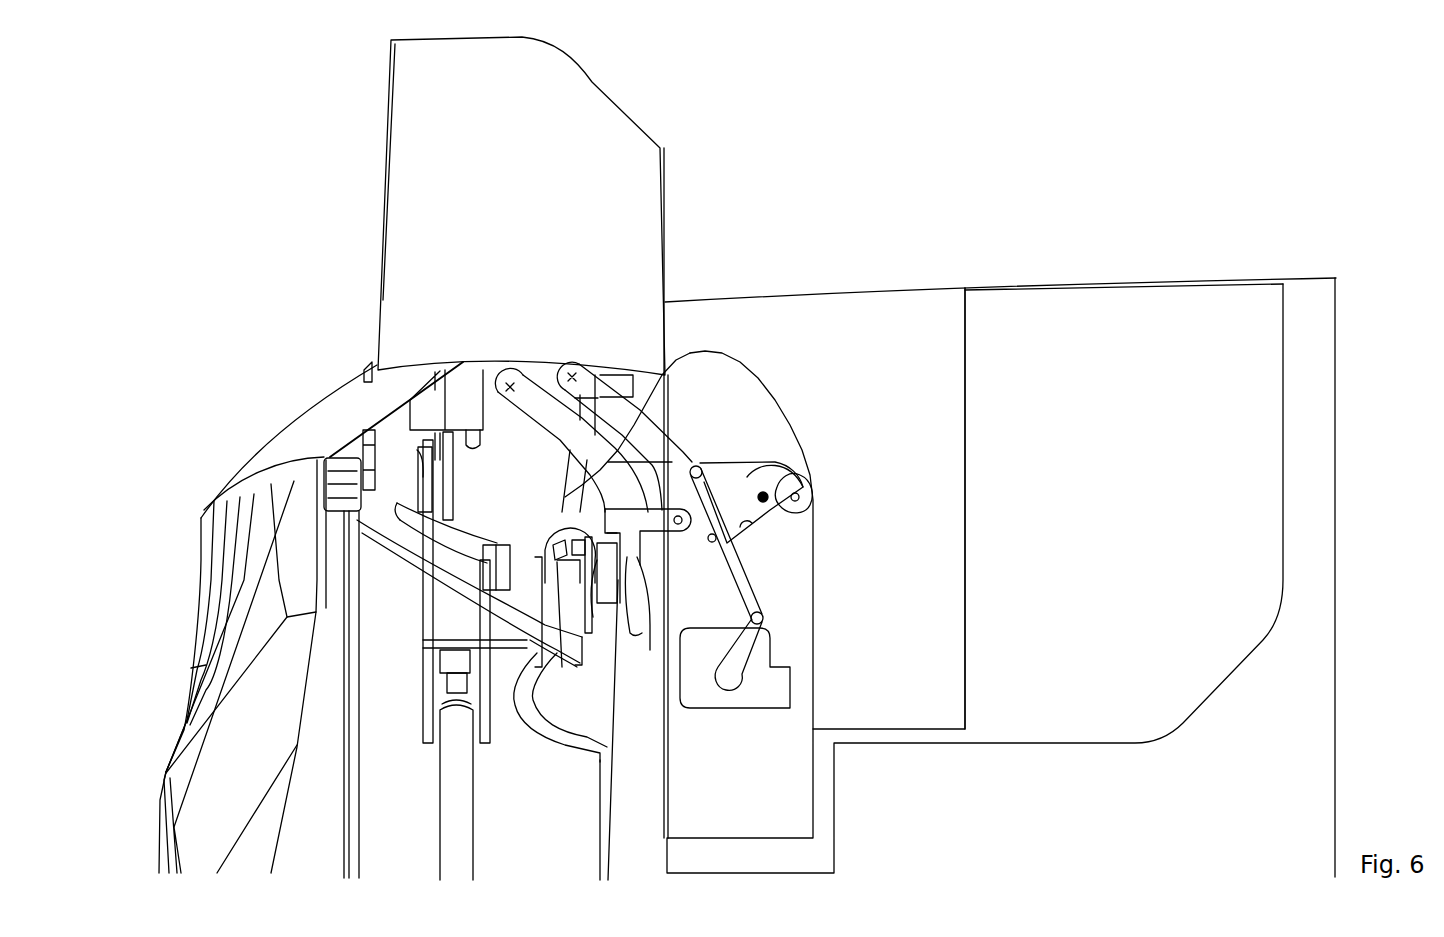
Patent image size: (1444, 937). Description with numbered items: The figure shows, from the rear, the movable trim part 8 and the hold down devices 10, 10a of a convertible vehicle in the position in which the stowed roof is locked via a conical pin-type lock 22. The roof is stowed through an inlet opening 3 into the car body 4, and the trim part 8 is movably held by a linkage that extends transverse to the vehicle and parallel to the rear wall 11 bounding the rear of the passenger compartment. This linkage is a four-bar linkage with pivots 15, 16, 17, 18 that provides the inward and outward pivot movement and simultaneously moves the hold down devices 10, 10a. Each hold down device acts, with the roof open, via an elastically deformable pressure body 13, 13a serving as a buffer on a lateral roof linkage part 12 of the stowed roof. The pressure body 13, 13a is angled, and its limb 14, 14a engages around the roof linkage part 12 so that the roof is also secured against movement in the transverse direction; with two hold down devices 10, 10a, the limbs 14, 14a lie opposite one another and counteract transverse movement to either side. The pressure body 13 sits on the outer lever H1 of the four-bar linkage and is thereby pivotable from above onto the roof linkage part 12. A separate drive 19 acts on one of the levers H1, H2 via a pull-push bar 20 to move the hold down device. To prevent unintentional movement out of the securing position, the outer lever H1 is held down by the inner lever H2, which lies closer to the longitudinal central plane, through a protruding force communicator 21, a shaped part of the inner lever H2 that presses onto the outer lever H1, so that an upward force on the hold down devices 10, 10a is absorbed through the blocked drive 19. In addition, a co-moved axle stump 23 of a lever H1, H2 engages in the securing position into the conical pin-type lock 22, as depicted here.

The trim part 8 is at (519, 181).
The inlet opening 3 is at (900, 330).
The rear wall 11 is at (1046, 369).
The car body 4 is at (373, 801).
The hold down device 10a is at (453, 397).
The four-bar linkage pivot 18 is at (508, 386).
The four-bar linkage pivot 17 is at (573, 377).
The pressure body 13a is at (417, 437).
The outer lever H1 is at (527, 398).
The inner lever H2 is at (600, 398).
The force communicator 21 is at (672, 357).
The hold down device 10 is at (646, 516).
The axle stump 23 is at (763, 495).
The conical pin-type lock 22 is at (805, 478).
The limb 14a is at (480, 443).
The lateral roof linkage part 12 is at (440, 447).
The pressure body 13 is at (617, 532).
The four-bar linkage pivot 16 is at (679, 526).
The four-bar linkage pivot 15 is at (712, 545).
The pull-push bar 20 is at (745, 585).
The drive 19 is at (706, 679).
The limb 14 is at (640, 565).